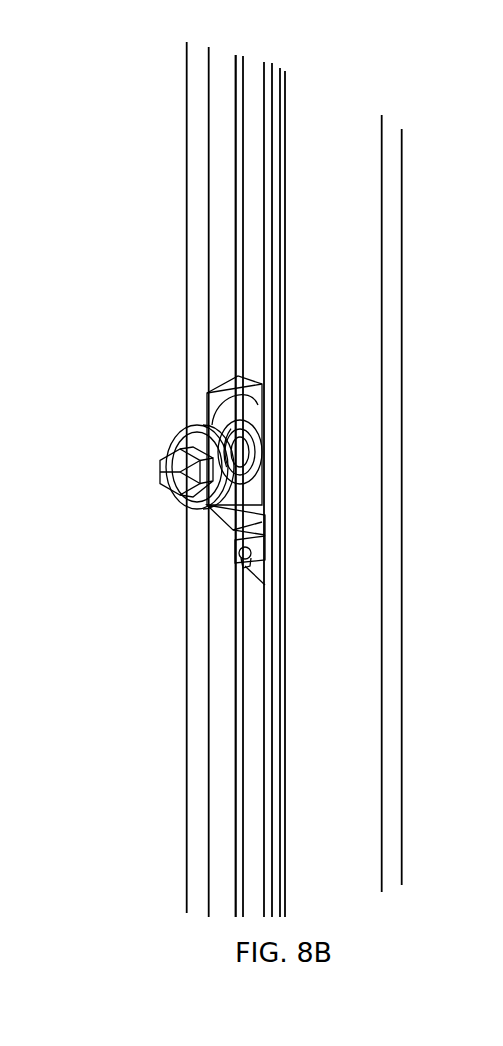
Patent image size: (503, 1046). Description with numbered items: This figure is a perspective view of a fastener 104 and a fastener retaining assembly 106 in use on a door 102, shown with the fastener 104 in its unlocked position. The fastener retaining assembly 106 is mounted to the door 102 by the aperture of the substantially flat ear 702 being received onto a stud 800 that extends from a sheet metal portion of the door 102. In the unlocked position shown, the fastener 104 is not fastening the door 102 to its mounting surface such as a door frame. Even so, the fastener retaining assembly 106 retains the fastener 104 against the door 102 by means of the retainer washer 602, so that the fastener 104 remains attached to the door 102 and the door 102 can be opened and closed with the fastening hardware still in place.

The door 102 is at (255, 318).
The fastener 104 is at (175, 473).
The fastener retaining assembly 106 is at (196, 400).
The retainer washer 602 is at (255, 455).
The ear 702 is at (258, 568).
The stud 800 is at (243, 553).